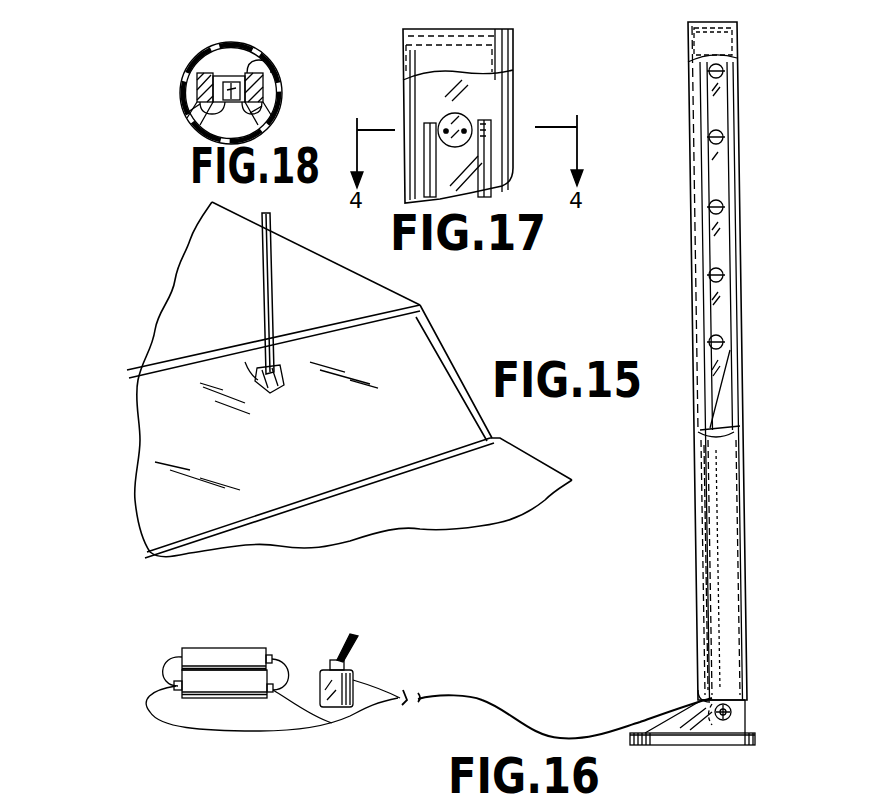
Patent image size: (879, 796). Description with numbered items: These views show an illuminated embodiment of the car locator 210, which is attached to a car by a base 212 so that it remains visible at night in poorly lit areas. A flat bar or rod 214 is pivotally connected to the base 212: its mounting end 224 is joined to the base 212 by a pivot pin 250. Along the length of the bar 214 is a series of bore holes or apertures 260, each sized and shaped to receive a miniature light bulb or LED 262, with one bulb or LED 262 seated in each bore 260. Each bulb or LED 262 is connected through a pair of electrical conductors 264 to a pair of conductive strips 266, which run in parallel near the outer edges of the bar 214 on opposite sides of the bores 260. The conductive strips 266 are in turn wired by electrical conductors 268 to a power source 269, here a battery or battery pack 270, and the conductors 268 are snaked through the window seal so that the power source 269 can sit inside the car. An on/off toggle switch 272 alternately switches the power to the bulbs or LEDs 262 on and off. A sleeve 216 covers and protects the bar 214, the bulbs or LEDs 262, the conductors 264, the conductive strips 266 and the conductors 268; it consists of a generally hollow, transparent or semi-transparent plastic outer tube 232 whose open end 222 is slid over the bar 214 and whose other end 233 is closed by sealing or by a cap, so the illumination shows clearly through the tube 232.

In FIG. 15, the car locator 210 is at (274, 302).
In FIG. 16, the car locator 210 is at (679, 84).
In FIG. 15, the base 212 is at (290, 393).
In FIG. 16, the base 212 is at (752, 720).
In FIG. 18, the flat bar or rod 214 is at (197, 85).
In FIG. 17, the flat bar or rod 214 is at (478, 84).
In FIG. 16, the flat bar or rod 214 is at (727, 418).
In FIG. 18, the sleeve 216 is at (182, 63).
In FIG. 17, the sleeve 216 is at (420, 66).
In FIG. 16, the sleeve 216 is at (727, 640).
In FIG. 16, the open end 222 is at (700, 696).
In FIG. 16, the mounting end 224 is at (714, 722).
In FIG. 18, the outer tube 232 is at (218, 96).
In FIG. 16, the outer tube 232 is at (715, 572).
In FIG. 16, the other end 233 is at (690, 26).
In FIG. 16, the pivot pin 250 is at (740, 704).
In FIG. 18, the bore holes or apertures 260 is at (262, 62).
In FIG. 16, the bore holes or apertures 260 is at (724, 69).
In FIG. 18, the light bulbs or LEDs 262 is at (253, 82).
In FIG. 17, the light bulbs or LEDs 262 is at (468, 118).
In FIG. 16, the light bulbs or LEDs 262 is at (723, 137).
In FIG. 18, the electrical conductors 264 is at (203, 113).
In FIG. 17, the electrical conductors 264 is at (490, 124).
In FIG. 16, the electrical conductors 264 is at (722, 207).
In FIG. 18, the conductive strips 266 is at (200, 108).
In FIG. 17, the conductive strips 266 is at (490, 150).
In FIG. 16, the conductive strips 266 is at (708, 248).
In FIG. 15, the electrical conductors 268 is at (247, 362).
In FIG. 16, the electrical conductors 268 is at (482, 703).
In FIG. 16, the power source 269 is at (291, 657).
In FIG. 16, the battery or battery pack 270 is at (211, 648).
In FIG. 16, the on/off toggle switch 272 is at (352, 670).